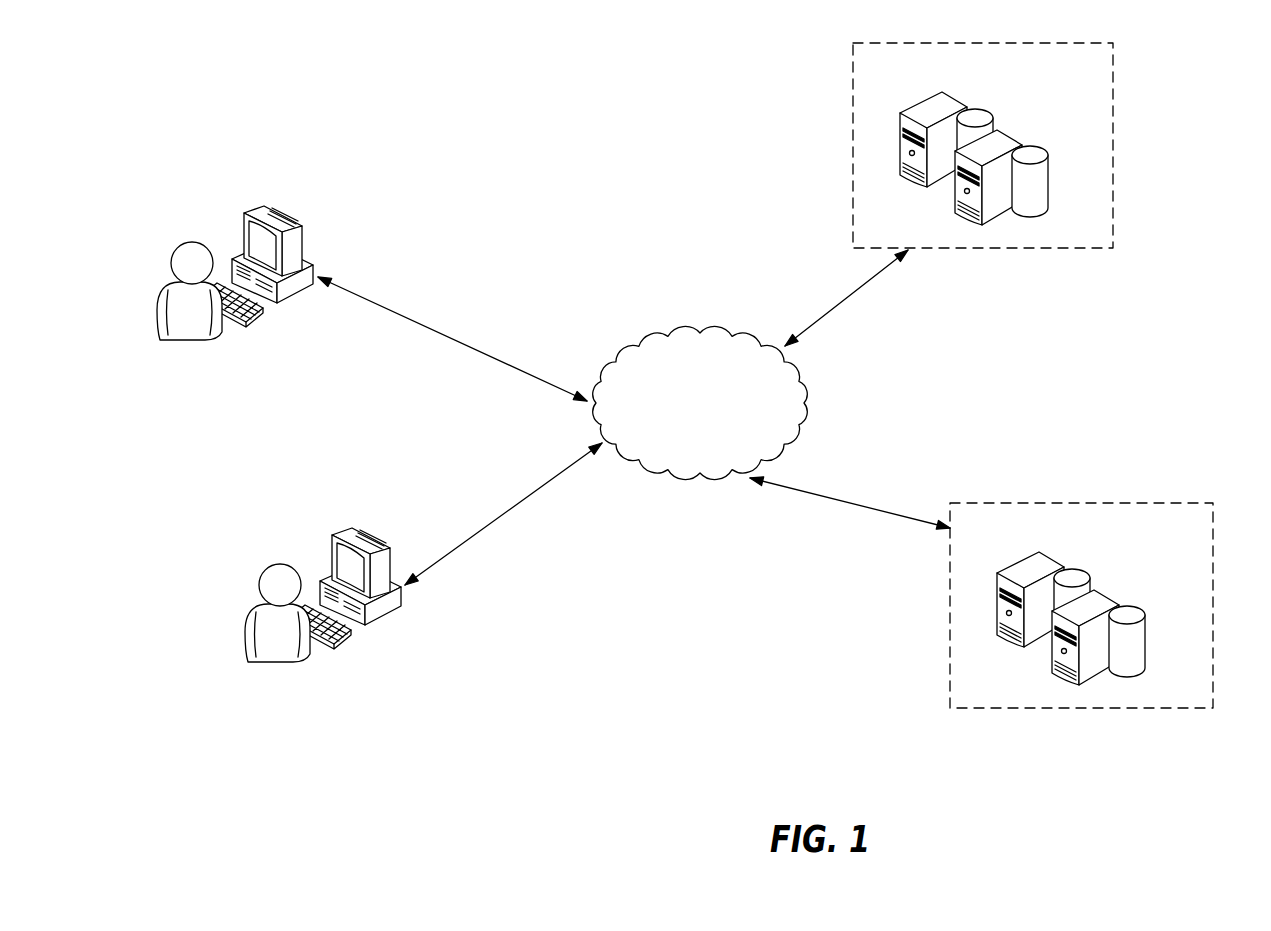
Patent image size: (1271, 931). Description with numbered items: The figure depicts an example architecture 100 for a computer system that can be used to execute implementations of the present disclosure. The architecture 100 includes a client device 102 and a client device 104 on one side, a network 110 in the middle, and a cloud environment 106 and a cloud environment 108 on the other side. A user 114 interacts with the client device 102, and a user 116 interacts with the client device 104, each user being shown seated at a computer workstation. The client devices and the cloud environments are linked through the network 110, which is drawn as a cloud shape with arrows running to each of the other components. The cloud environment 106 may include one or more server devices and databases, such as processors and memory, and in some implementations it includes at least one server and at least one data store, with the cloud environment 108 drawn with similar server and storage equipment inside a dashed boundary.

The architecture 100 is at (550, 91).
The client device 102 is at (248, 213).
The client device 104 is at (336, 535).
The cloud environment 106 is at (1113, 145).
The cloud environment 108 is at (950, 605).
The network 110 is at (697, 331).
The user 114 is at (193, 341).
The user 116 is at (281, 663).